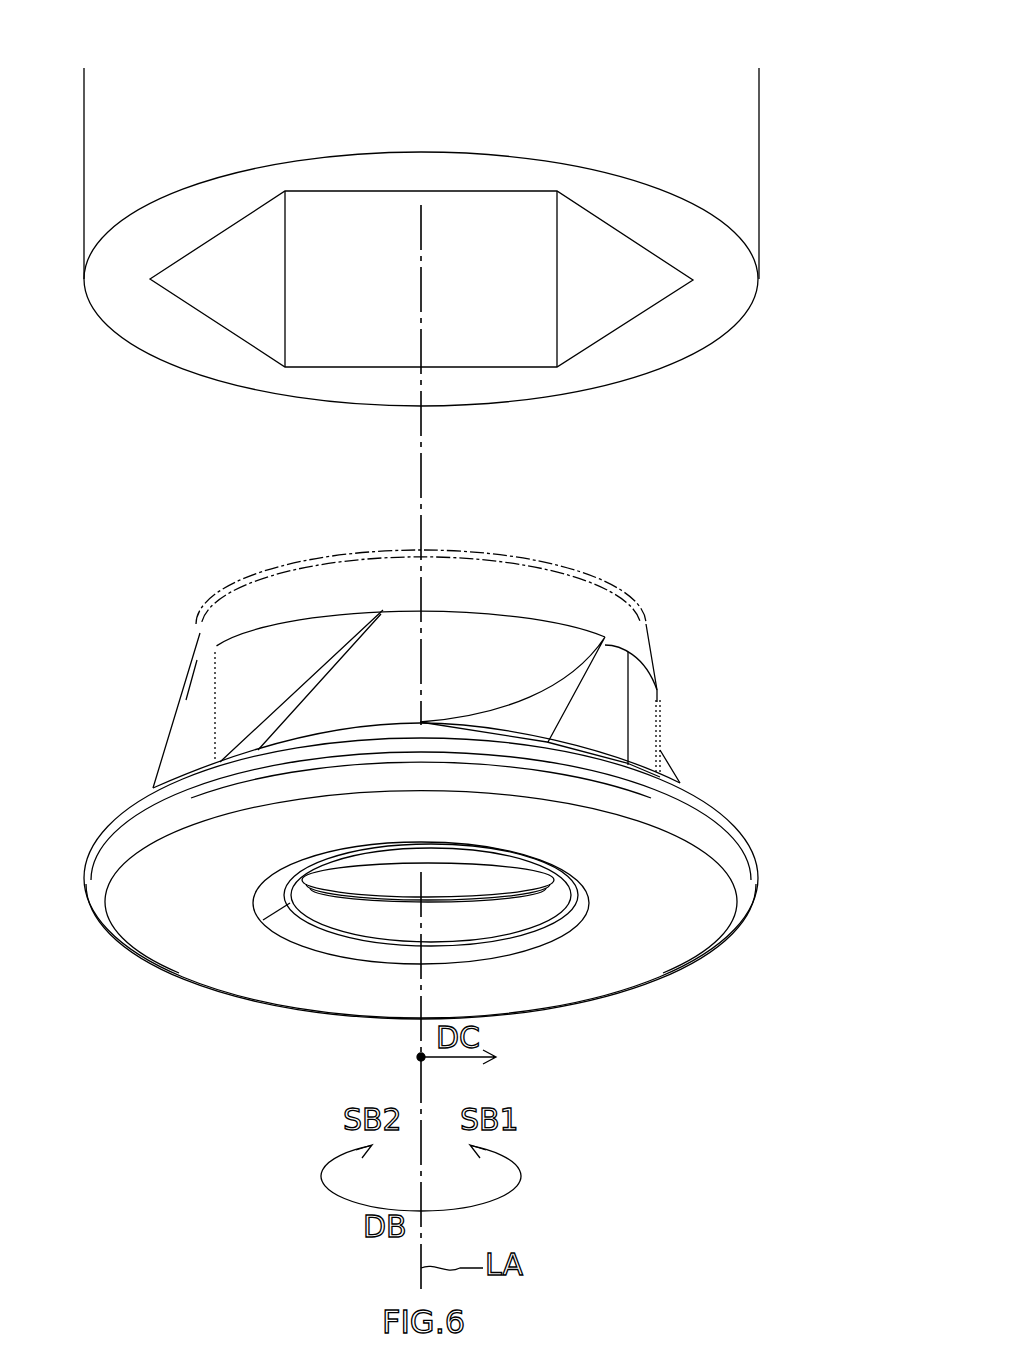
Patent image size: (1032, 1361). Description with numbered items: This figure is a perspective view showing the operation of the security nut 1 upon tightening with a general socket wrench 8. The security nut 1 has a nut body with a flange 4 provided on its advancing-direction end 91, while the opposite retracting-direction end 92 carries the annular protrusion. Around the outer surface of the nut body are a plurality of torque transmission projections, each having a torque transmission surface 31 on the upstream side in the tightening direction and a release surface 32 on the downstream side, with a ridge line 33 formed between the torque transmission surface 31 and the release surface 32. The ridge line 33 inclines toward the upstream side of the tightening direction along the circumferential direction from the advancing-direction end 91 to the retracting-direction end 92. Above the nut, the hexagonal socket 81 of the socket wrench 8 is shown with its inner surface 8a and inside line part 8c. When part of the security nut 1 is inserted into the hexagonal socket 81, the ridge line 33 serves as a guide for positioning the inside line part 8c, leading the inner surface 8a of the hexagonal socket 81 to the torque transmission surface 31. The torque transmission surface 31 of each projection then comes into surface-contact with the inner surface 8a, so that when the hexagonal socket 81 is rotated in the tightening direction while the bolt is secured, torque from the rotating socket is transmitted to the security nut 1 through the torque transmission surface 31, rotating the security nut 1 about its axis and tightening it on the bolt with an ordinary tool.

The security nut 1 is at (708, 585).
The flange 4 is at (727, 850).
The socket wrench 8 is at (808, 52).
The hexagonal socket 81 is at (733, 105).
The inner surface 8a is at (300, 312).
The inside line part 8c is at (472, 367).
The torque transmission surface 31 is at (333, 703).
The release surface 32 is at (265, 738).
The ridge line 33 is at (335, 662).
The advancing-direction end 91 is at (437, 723).
The retracting-direction end 92 is at (510, 612).